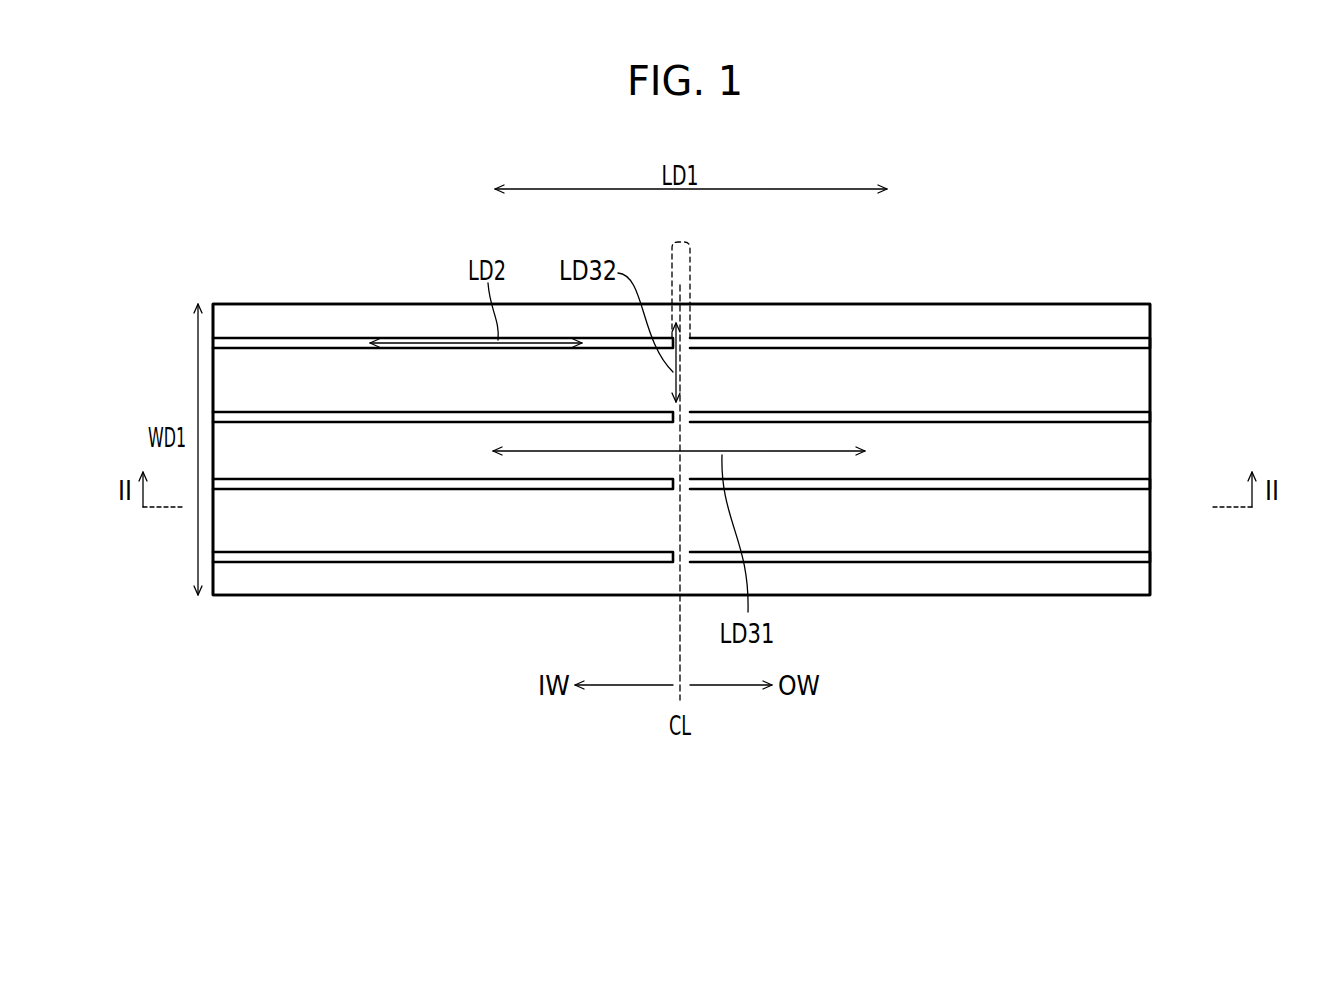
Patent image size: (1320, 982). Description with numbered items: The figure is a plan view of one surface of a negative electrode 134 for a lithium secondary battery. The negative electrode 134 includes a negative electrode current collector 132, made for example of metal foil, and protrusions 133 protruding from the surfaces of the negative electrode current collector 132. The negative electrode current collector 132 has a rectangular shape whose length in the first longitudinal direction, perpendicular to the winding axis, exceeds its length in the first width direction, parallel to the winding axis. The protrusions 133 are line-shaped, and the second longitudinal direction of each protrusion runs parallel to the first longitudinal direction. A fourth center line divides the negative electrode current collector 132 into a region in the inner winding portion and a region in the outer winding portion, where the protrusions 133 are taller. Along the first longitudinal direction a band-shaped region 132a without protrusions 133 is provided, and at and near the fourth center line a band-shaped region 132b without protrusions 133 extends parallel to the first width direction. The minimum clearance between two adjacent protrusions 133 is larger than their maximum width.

The negative electrode current collector 132 is at (750, 325).
The band-shaped region 132a is at (1152, 411).
The band-shaped region 132b is at (682, 273).
The protrusions 133 is at (1013, 343).
The negative electrode 134 is at (1090, 218).